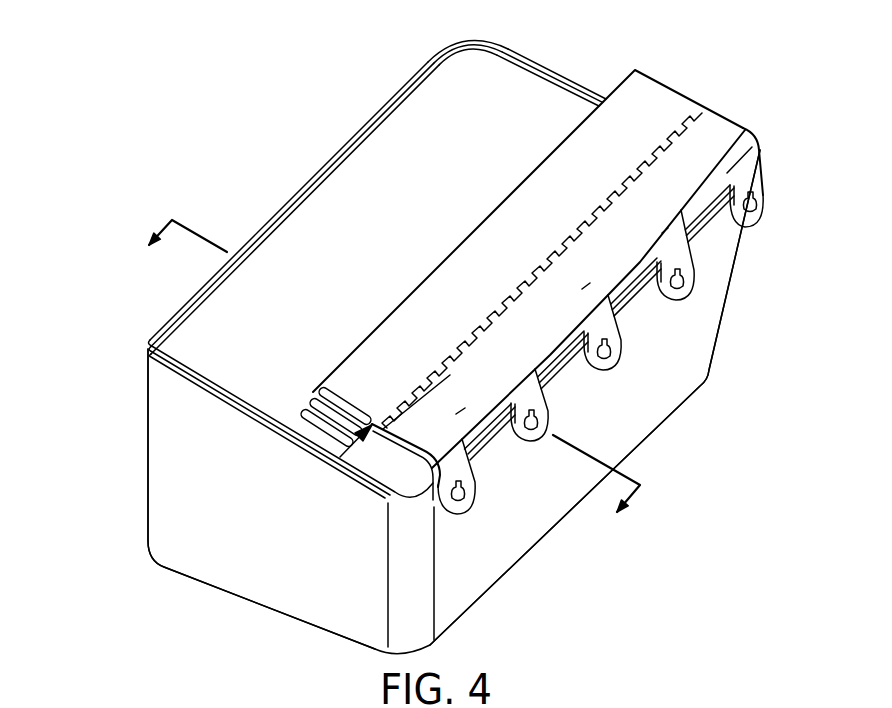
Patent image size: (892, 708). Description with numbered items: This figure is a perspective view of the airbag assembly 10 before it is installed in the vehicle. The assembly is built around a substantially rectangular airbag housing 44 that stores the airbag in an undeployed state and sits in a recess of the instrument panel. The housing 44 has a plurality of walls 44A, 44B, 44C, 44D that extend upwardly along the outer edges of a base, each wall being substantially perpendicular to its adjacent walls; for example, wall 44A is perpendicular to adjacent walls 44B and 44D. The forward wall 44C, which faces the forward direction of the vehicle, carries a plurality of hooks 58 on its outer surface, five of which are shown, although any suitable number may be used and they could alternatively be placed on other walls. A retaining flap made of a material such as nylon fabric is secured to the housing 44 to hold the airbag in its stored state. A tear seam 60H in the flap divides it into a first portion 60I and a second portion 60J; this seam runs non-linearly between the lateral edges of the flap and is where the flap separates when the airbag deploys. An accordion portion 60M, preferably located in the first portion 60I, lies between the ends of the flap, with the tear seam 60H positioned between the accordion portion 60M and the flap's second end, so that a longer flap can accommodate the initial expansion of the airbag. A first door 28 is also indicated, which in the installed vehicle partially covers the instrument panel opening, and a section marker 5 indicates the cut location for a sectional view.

The airbag assembly 10 is at (285, 95).
The first door 28 is at (526, 58).
The airbag housing 44 is at (148, 452).
The wall 44A is at (303, 193).
The wall 44B is at (267, 547).
The forward wall 44C is at (660, 360).
The wall 44D is at (567, 72).
The hooks 58 is at (684, 284).
The tear seam 60H is at (497, 308).
The first portion 60I is at (385, 168).
The second portion 60J is at (712, 132).
The accordion portion 60M is at (372, 330).
The section line 5- 5 is at (383, 385).